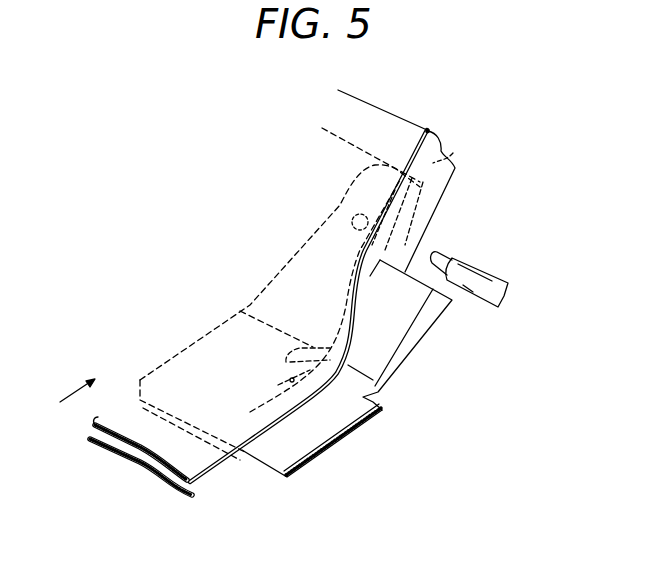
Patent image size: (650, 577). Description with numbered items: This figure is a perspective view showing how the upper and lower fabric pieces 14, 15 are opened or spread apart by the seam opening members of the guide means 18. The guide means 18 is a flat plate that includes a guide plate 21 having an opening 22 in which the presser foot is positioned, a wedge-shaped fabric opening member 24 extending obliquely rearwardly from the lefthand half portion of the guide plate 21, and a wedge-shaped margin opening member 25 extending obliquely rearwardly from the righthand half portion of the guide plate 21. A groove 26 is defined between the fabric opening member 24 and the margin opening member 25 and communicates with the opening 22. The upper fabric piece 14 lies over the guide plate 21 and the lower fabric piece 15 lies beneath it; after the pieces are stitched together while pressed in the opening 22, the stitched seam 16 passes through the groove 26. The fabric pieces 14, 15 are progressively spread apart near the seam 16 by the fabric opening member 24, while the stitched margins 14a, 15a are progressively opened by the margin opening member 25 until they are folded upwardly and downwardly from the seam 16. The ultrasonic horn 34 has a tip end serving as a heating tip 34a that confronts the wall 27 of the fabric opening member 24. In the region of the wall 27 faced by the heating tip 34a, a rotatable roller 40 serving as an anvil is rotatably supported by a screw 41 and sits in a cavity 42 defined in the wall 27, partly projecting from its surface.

The upper fabric piece 14 is at (115, 428).
The lower fabric piece 15 is at (120, 448).
The stitched margin of upper fabric piece 14a is at (424, 142).
The stitched margin of lower fabric piece 15a is at (437, 198).
The stitched seam 16 is at (303, 376).
The guide means 18 is at (330, 446).
The guide plate 21 is at (267, 452).
The opening 22 is at (260, 392).
The wedge-shaped fabric opening member 24 is at (278, 283).
The wedge-shaped margin opening member 25 is at (422, 327).
The groove 26 is at (370, 277).
The wall of fabric opening member 27 is at (427, 224).
The ultrasonic horn 34 is at (482, 297).
The heating tip 34a is at (438, 249).
The rotatable roller 40 is at (380, 212).
The screw 41 is at (352, 217).
The cavity 42 is at (453, 153).